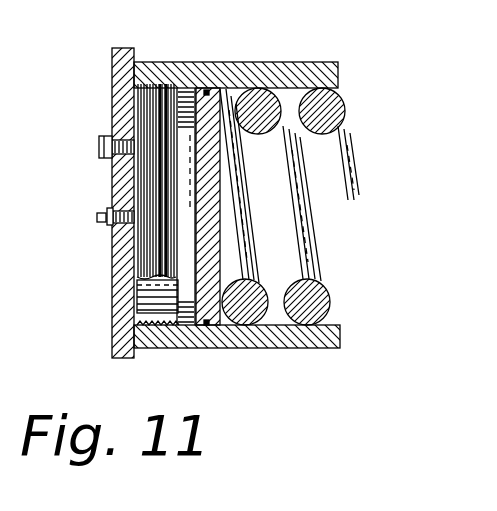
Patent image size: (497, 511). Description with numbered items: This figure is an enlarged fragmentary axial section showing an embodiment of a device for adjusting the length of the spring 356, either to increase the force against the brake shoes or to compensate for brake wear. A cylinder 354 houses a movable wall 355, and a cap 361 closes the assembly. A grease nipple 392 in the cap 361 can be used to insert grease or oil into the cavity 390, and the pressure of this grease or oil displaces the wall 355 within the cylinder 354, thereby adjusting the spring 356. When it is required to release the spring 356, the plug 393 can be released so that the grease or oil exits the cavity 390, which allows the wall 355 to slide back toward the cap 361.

The cylinder 354 is at (307, 64).
The wall 355 is at (218, 90).
The spring 356 is at (352, 136).
The cap 361 is at (114, 291).
The cavity 390 is at (186, 300).
The grease nipple 392 is at (112, 227).
The plug 393 is at (102, 145).